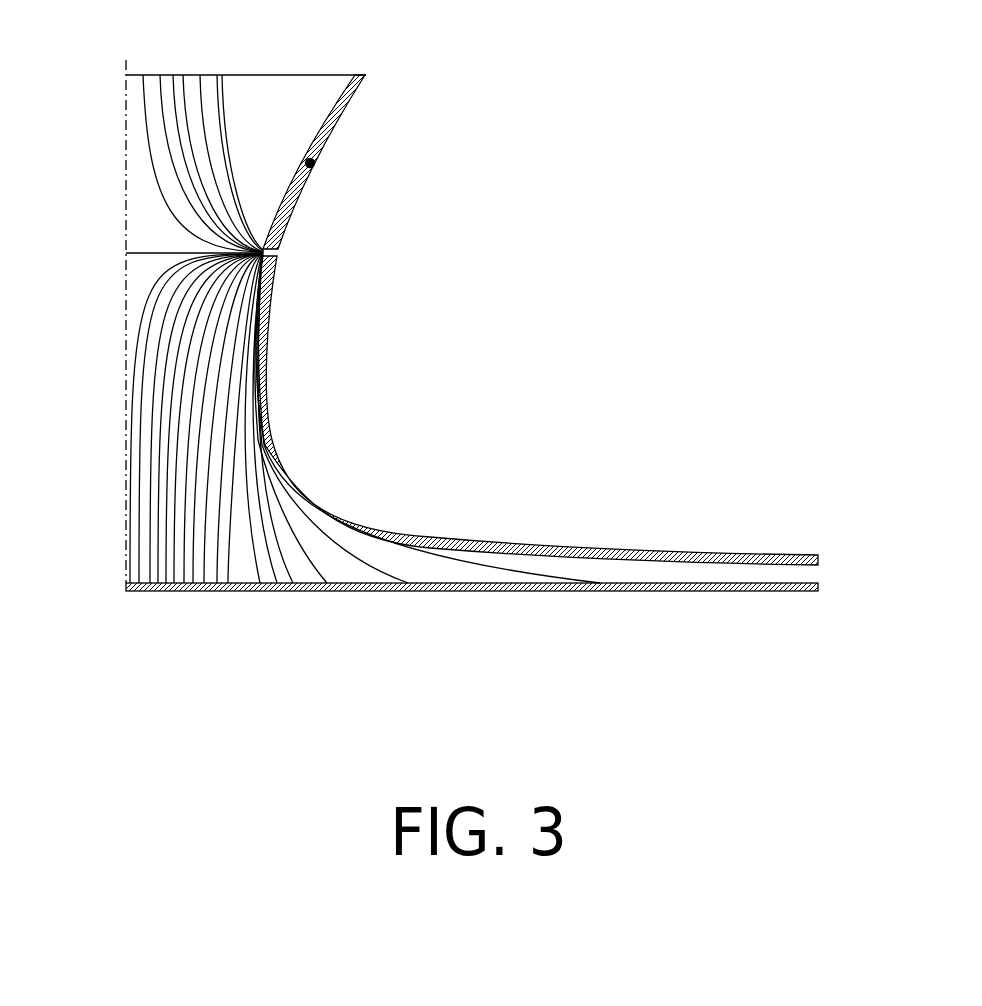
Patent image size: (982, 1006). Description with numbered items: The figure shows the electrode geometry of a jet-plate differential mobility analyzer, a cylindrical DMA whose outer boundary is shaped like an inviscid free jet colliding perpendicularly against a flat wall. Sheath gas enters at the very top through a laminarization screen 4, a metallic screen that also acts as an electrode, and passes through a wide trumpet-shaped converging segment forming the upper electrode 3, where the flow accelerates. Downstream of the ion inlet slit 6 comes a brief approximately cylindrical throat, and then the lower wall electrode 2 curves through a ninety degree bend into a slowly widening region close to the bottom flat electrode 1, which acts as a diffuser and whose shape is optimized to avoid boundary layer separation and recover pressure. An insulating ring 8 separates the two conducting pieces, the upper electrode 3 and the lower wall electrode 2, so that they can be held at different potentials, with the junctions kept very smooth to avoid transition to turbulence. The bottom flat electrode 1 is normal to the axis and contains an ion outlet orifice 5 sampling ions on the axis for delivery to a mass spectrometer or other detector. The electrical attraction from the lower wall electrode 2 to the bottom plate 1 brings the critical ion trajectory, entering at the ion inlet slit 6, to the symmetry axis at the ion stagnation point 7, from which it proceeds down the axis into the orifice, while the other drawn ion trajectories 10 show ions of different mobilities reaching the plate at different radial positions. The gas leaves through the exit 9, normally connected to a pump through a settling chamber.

The bottom flat electrode 1 is at (407, 589).
The lower wall electrode 2 is at (293, 480).
The upper electrode 3 is at (352, 103).
The laminarization screen 4 is at (223, 73).
The ion outlet orifice 5 is at (126, 592).
The ion inlet slit 6 is at (284, 250).
The ion stagnation point 7 is at (127, 253).
The insulating ring 8 is at (316, 166).
The exit 9 is at (795, 572).
The ion trajectories 10 is at (182, 378).